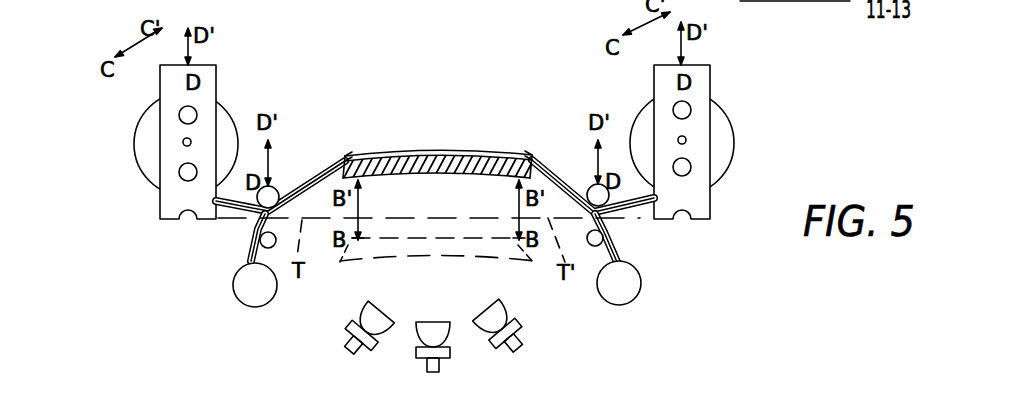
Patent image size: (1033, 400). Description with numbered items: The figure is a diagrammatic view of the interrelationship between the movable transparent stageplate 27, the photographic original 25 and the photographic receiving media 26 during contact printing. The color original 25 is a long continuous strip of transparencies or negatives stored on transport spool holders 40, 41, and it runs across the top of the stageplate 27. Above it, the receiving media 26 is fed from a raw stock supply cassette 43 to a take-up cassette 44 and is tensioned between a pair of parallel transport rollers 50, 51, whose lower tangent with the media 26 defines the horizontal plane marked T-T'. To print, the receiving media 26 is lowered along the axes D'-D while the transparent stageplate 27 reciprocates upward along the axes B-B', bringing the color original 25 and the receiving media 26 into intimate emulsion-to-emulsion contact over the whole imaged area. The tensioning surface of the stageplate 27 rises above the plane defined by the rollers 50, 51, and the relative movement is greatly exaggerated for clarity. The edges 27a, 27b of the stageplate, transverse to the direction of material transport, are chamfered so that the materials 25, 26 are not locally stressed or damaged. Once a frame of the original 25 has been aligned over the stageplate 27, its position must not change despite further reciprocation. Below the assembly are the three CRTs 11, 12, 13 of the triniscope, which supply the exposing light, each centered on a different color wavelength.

The CRT 11 is at (343, 345).
The CRT 12 is at (428, 362).
The CRT 13 is at (522, 342).
The color original strip 25 is at (245, 256).
The photographic image receiving media 26 is at (230, 209).
The transparent stageplate 27 is at (455, 181).
The stageplate edge 27a is at (346, 158).
The stageplate edge 27b is at (531, 157).
The transport spool holder 40 is at (245, 304).
The transport spool holder 41 is at (632, 293).
The raw stock supply cassette 43 is at (231, 111).
The take-up cassette 44 is at (733, 135).
The transport roller 50 is at (273, 187).
The transport roller 51 is at (590, 185).